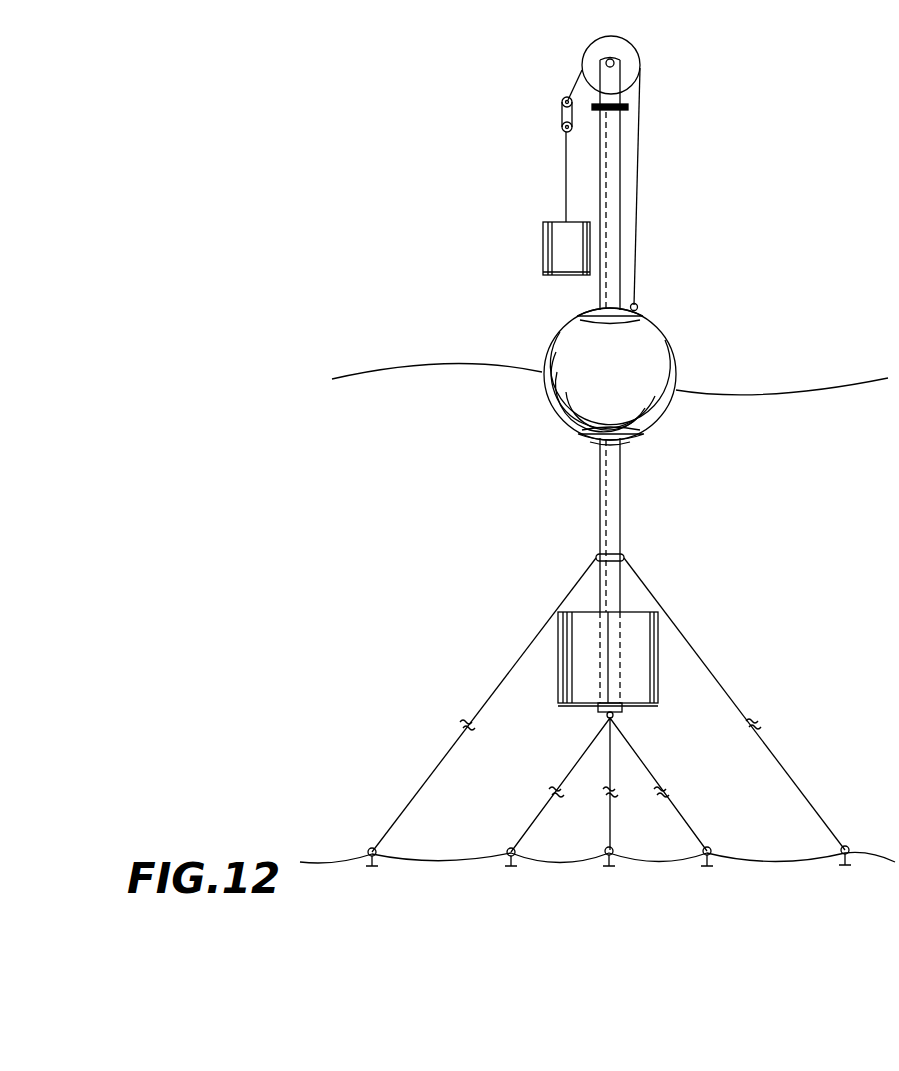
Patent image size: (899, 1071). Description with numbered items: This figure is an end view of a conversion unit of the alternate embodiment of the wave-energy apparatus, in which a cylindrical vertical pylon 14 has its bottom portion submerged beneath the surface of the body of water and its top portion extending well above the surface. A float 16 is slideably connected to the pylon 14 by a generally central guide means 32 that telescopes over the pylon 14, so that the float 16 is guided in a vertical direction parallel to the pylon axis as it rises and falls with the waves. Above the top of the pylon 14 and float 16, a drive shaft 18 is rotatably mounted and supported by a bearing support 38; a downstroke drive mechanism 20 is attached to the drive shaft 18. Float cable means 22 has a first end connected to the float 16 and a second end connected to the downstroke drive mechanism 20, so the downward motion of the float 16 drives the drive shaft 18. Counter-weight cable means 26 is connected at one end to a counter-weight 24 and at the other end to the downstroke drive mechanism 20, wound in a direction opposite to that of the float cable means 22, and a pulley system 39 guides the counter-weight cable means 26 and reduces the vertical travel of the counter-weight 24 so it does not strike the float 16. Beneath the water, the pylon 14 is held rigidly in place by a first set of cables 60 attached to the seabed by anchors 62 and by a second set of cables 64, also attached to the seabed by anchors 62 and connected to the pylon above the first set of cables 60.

The vertical pylon 14 is at (627, 458).
The float 16 is at (672, 343).
The drive shaft 18 is at (640, 63).
The downstroke drive mechanism 20 is at (638, 45).
The float cable means 22 is at (638, 173).
The counter-weight 24 is at (543, 250).
The counter-weight cable means 26 is at (565, 180).
The guide means 32 is at (585, 438).
The bearing support 38 is at (610, 82).
The pulley system 39 is at (563, 110).
The first set of cables 60 is at (688, 820).
The anchors 62 is at (390, 852).
The second set of cables 64 is at (535, 633).